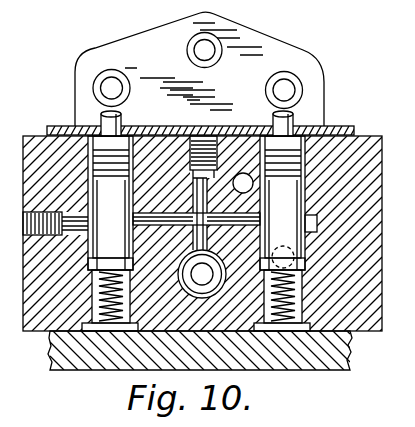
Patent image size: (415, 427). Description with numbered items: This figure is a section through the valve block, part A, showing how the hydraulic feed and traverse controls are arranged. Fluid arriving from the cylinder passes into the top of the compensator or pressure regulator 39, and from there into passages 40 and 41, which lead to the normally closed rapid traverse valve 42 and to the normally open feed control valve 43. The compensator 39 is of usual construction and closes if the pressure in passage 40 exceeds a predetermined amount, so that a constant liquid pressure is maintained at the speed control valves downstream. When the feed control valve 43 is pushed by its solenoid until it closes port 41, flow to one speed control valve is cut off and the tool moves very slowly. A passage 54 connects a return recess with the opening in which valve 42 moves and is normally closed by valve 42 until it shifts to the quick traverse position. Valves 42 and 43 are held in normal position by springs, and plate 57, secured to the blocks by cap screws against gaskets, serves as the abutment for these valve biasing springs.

The part A is at (360, 148).
The compensator or pressure regulator 39 is at (191, 293).
The passage 40 is at (208, 246).
The passage 41 is at (176, 226).
The rapid traverse valve 42 is at (279, 150).
The feed control valve 43 is at (102, 153).
The passage 54 is at (295, 251).
The plate 57 is at (72, 356).